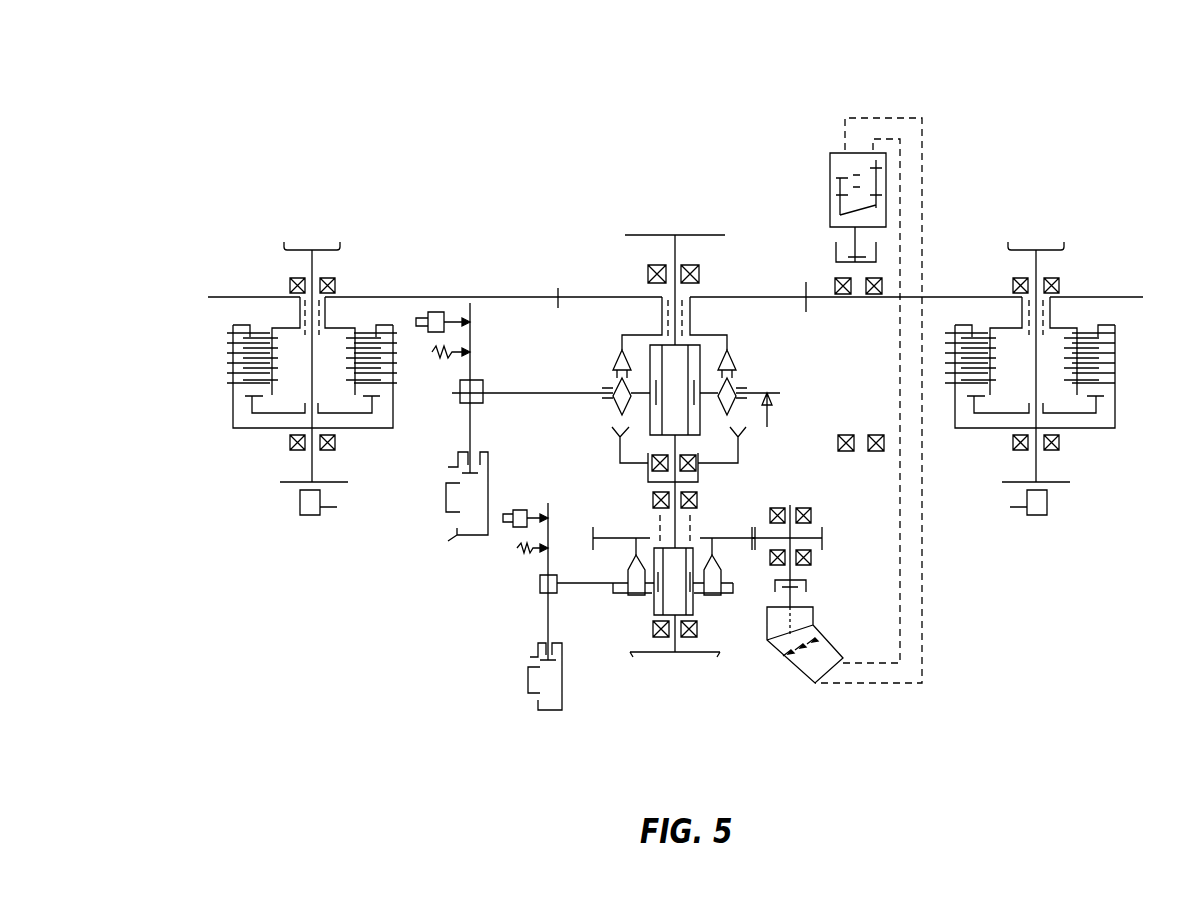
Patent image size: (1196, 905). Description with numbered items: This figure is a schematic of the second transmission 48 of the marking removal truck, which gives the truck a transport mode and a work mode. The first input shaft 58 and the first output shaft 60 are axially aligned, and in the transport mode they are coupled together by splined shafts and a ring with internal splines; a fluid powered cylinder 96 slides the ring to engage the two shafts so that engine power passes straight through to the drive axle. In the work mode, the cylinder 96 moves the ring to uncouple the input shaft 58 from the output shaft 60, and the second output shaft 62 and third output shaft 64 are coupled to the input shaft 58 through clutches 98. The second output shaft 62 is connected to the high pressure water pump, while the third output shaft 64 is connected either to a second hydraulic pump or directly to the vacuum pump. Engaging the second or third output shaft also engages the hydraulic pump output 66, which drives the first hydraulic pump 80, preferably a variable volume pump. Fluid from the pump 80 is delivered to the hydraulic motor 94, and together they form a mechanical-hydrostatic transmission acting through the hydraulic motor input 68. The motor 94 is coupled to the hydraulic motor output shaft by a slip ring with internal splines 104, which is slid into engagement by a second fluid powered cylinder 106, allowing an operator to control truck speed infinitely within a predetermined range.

The second transmission 48 is at (268, 141).
The first input shaft 58 is at (660, 238).
The first output shaft 60 is at (688, 652).
The second output shaft 62 is at (1021, 245).
The third output shaft 64 is at (297, 245).
The hydraulic pump output 66 is at (795, 580).
The hydraulic motor input 68 is at (830, 263).
The first hydraulic pump 80 is at (831, 153).
The hydraulic motor 94 is at (800, 673).
The fluid powered cylinder 96 is at (455, 532).
The clutches 98 is at (240, 428).
The slip ring with internal splines 104 is at (650, 600).
The fluid powered cylinder 106 is at (528, 698).